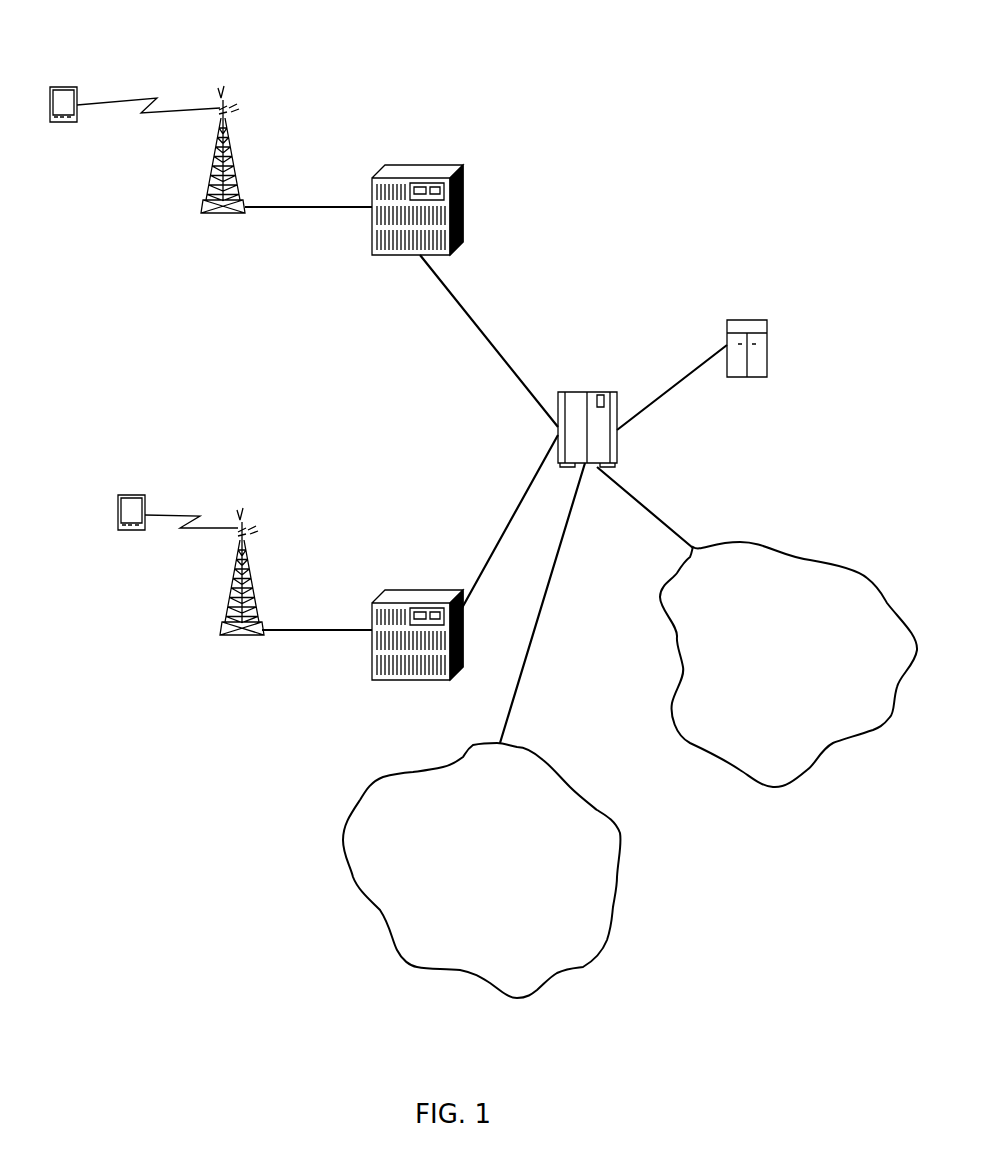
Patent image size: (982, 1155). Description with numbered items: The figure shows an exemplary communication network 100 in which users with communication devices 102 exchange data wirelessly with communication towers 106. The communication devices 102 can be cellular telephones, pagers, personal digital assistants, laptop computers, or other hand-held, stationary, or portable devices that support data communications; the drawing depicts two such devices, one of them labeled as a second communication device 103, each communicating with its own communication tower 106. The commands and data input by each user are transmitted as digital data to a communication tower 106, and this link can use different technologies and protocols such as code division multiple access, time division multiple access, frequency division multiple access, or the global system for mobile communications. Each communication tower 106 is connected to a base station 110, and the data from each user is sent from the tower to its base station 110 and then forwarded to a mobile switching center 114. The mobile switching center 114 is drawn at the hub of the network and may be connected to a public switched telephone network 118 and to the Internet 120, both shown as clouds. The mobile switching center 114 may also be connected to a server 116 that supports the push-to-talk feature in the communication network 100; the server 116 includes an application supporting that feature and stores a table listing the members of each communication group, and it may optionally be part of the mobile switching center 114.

The communication network 100 is at (573, 65).
The communication device 102 is at (78, 96).
The communication device 2 103 is at (145, 500).
The communication tower 106 is at (233, 140).
The base station 110 is at (463, 193).
The mobile switching center 114 is at (603, 392).
The server 116 is at (762, 320).
The public switched telephone network 118 is at (785, 553).
The Internet 120 is at (568, 783).